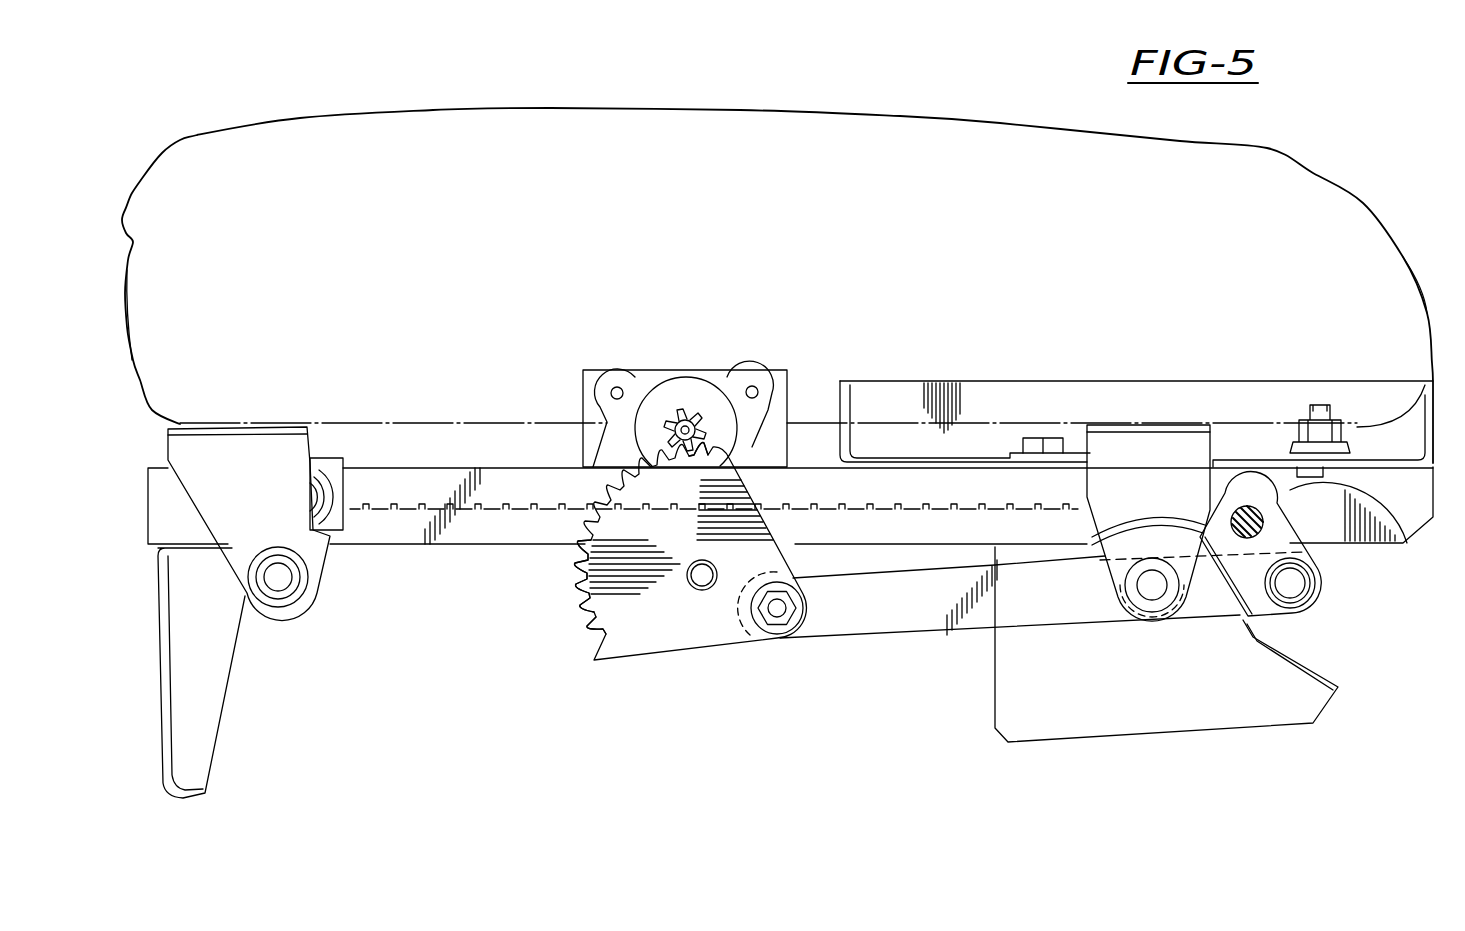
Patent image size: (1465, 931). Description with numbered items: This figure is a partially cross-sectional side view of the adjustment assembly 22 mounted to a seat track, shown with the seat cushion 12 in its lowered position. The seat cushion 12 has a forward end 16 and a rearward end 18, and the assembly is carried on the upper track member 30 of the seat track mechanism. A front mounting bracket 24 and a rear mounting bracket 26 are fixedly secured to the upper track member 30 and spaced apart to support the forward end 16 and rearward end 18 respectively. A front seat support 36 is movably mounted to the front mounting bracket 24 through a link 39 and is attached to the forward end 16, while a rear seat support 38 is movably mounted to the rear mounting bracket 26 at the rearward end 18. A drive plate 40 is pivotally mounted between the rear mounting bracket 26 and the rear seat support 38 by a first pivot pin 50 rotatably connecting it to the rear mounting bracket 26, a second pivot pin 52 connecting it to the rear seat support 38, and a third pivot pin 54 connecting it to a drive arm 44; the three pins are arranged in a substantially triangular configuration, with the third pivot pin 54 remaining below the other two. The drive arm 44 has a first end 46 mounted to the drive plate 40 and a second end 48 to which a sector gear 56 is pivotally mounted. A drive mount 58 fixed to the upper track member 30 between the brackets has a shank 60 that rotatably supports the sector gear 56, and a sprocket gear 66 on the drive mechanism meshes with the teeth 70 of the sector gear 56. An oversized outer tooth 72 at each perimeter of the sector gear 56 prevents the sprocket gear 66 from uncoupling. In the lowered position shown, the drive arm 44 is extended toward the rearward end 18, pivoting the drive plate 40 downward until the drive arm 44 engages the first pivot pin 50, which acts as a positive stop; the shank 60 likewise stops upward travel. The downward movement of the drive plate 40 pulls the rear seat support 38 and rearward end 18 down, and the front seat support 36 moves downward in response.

The seat cushion 12 is at (742, 153).
The forward end 16 is at (127, 235).
The rearward end 18 is at (1407, 257).
The adjustment assembly 22 is at (618, 707).
The front mounting bracket 24 is at (342, 460).
The rear mounting bracket 26 is at (1408, 544).
The upper track member 30 is at (398, 540).
The front seat support 36 is at (260, 492).
The rear seat support 38 is at (1125, 438).
The link 39 is at (320, 553).
The drive plate 40 is at (1290, 523).
The drive arm 44 is at (920, 620).
The first end 46 is at (1318, 585).
The second end 48 is at (750, 635).
The first pivot pin 50 is at (1247, 506).
The second pivot pin 52 is at (1152, 590).
The third pivot pin 54 is at (1290, 590).
The sector gear 56 is at (652, 645).
The drive mount 58 is at (783, 392).
The shank 60 is at (702, 590).
The sprocket gear 66 is at (686, 426).
The teeth 70 is at (580, 577).
The oversized outer tooth 72 is at (597, 640).